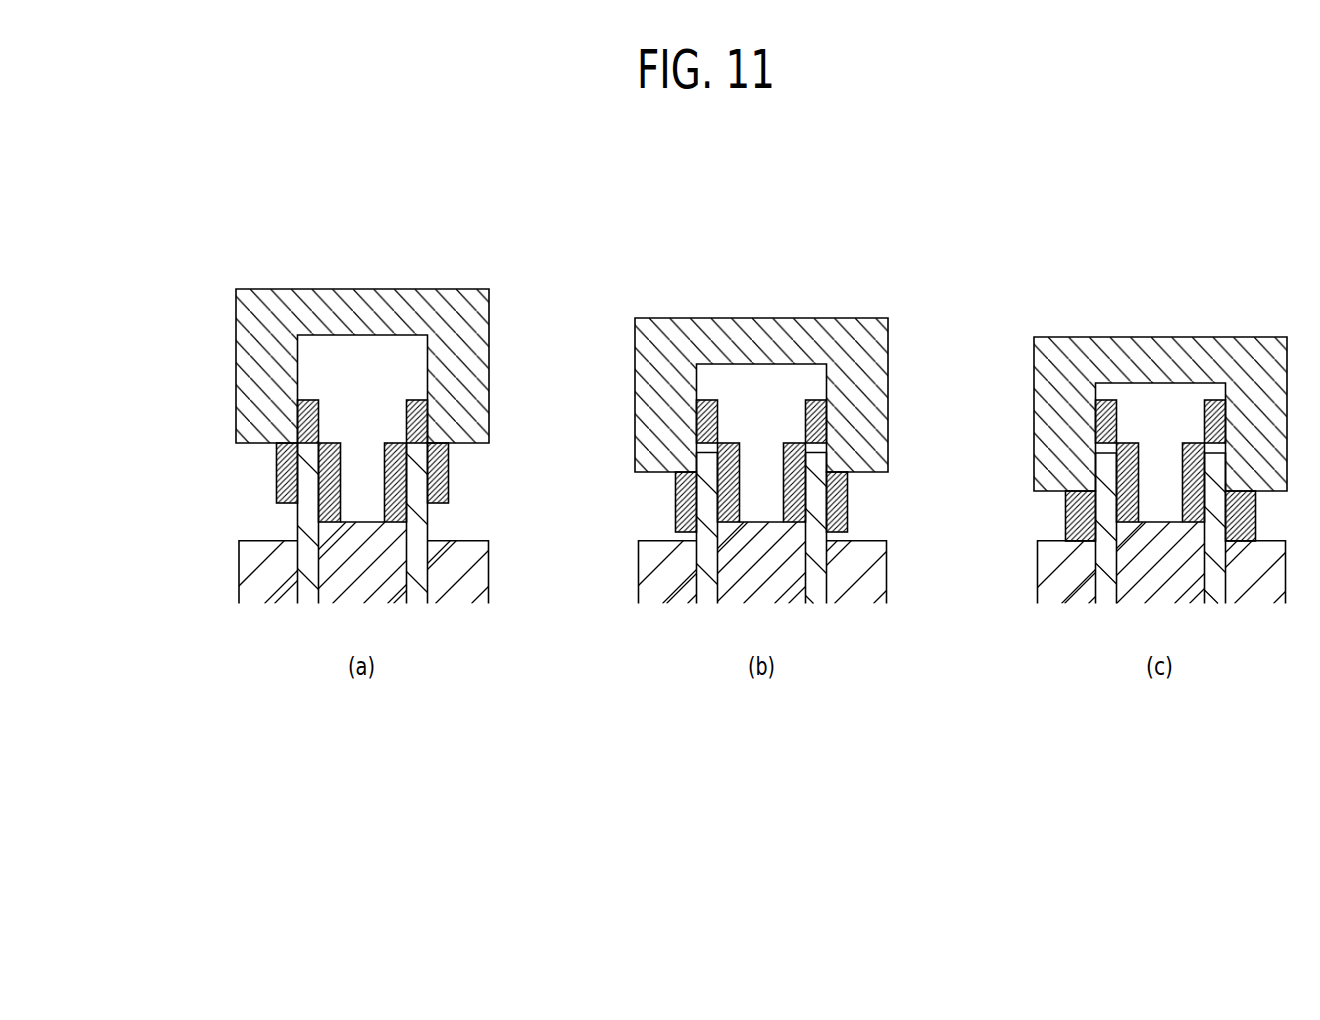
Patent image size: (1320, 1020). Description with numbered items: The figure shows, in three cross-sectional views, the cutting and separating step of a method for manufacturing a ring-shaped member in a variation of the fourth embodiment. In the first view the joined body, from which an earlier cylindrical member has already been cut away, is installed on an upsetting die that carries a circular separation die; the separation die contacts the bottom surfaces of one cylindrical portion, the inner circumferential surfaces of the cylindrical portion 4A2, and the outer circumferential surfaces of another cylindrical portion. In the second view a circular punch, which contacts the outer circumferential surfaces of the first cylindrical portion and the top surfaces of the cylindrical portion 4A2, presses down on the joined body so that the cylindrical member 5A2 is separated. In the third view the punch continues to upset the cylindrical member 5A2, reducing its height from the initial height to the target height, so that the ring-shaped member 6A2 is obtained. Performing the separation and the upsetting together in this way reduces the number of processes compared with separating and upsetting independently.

The cylindrical portion 4A2 is at (276, 473).
The cylindrical member 5A2 is at (677, 495).
The ring-shaped member 6A2 is at (1067, 503).